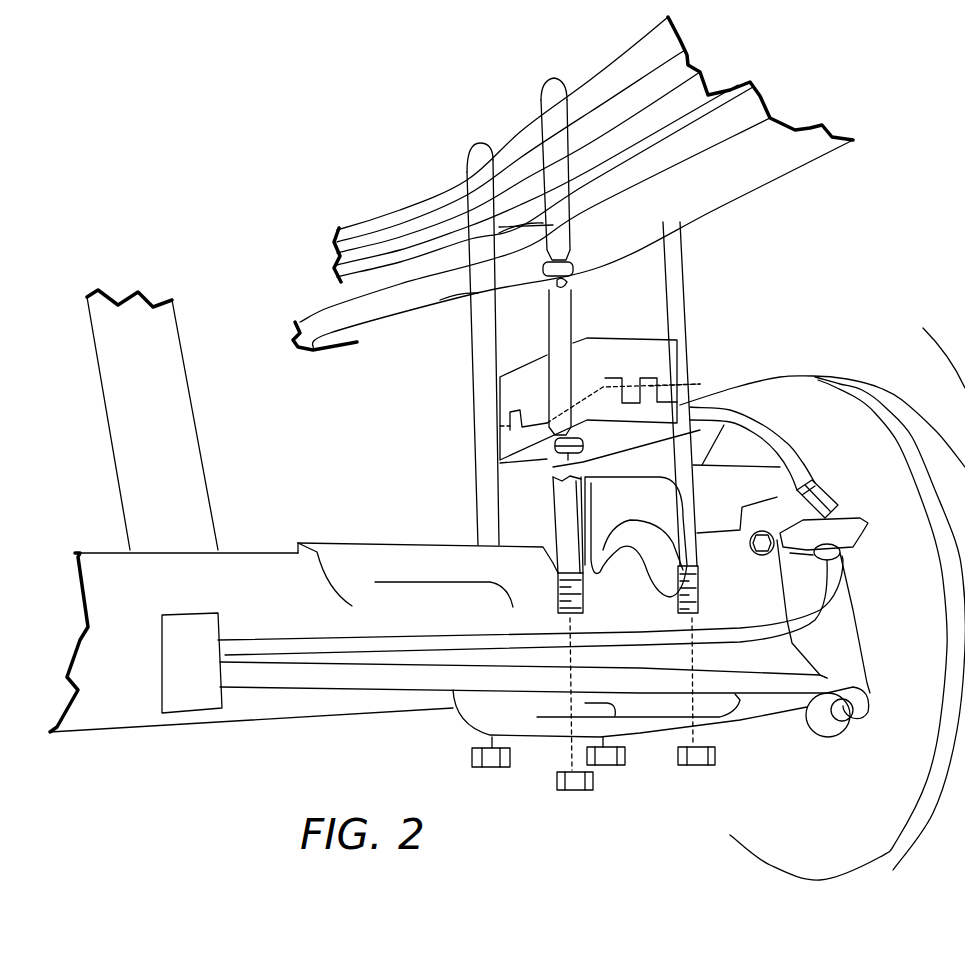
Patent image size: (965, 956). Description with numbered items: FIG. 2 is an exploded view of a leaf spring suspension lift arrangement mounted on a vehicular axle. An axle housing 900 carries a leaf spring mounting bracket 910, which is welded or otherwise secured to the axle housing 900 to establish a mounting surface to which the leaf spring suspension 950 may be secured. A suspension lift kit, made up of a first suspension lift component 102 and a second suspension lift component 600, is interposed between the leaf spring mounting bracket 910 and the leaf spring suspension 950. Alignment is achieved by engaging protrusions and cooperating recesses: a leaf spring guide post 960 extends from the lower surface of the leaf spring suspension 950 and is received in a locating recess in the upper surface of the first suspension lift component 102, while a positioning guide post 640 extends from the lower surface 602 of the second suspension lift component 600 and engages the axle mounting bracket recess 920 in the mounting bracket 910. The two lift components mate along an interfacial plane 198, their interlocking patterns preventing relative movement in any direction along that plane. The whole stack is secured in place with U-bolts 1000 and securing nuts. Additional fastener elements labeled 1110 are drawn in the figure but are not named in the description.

The leaf spring suspension 950 is at (430, 223).
The leaf spring guide post 960 is at (560, 271).
The U-bolts 1000 is at (478, 255).
The first suspension lift component 102 is at (513, 389).
The interfacial plane 198 is at (700, 387).
The second suspension lift component 600 is at (705, 406).
The lower surface 602 is at (633, 430).
The positioning guide post 640 is at (555, 446).
The axle mounting bracket recess 920 is at (553, 467).
The axle housing 900 is at (229, 556).
The fasteners 1110 is at (487, 767).
The leaf spring mounting bracket 910 is at (650, 560).